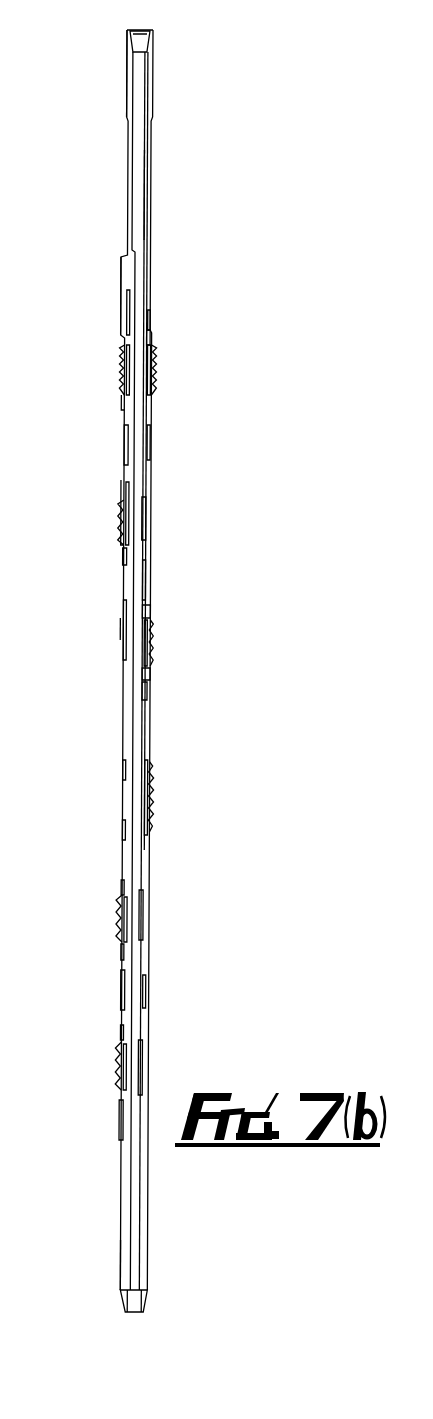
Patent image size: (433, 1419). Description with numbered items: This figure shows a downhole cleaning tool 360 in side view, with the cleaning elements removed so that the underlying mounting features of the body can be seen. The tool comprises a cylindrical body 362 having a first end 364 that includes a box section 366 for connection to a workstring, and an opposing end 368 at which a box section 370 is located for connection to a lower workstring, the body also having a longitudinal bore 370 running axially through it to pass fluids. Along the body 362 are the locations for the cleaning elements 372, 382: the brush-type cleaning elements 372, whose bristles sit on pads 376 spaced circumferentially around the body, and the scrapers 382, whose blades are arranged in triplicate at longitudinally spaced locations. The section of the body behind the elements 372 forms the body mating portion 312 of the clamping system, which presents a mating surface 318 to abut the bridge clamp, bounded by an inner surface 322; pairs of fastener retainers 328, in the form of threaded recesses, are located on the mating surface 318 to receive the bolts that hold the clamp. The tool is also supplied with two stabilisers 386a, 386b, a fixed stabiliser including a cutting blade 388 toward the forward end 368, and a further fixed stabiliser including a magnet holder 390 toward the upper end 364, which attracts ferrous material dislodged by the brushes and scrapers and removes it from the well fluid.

The cleaning tool 360 is at (211, 105).
The box section 366 is at (150, 30).
The first end 364 is at (127, 38).
The cylindrical body 362 is at (127, 98).
The cleaning element 372 is at (150, 195).
The magnet holder 390 is at (128, 300).
The pad 376 is at (153, 332).
The stabiliser 386a is at (153, 433).
The body mating portion 312 is at (150, 588).
The fastener retainers 328 is at (152, 612).
The inner surface 322 is at (152, 622).
The mating surface 318 is at (150, 684).
The scraper 382 is at (153, 795).
The stabiliser 386b is at (153, 997).
The cutting blade 388 is at (124, 1134).
The opposing end 368 is at (126, 1282).
The box section 370 is at (145, 1312).